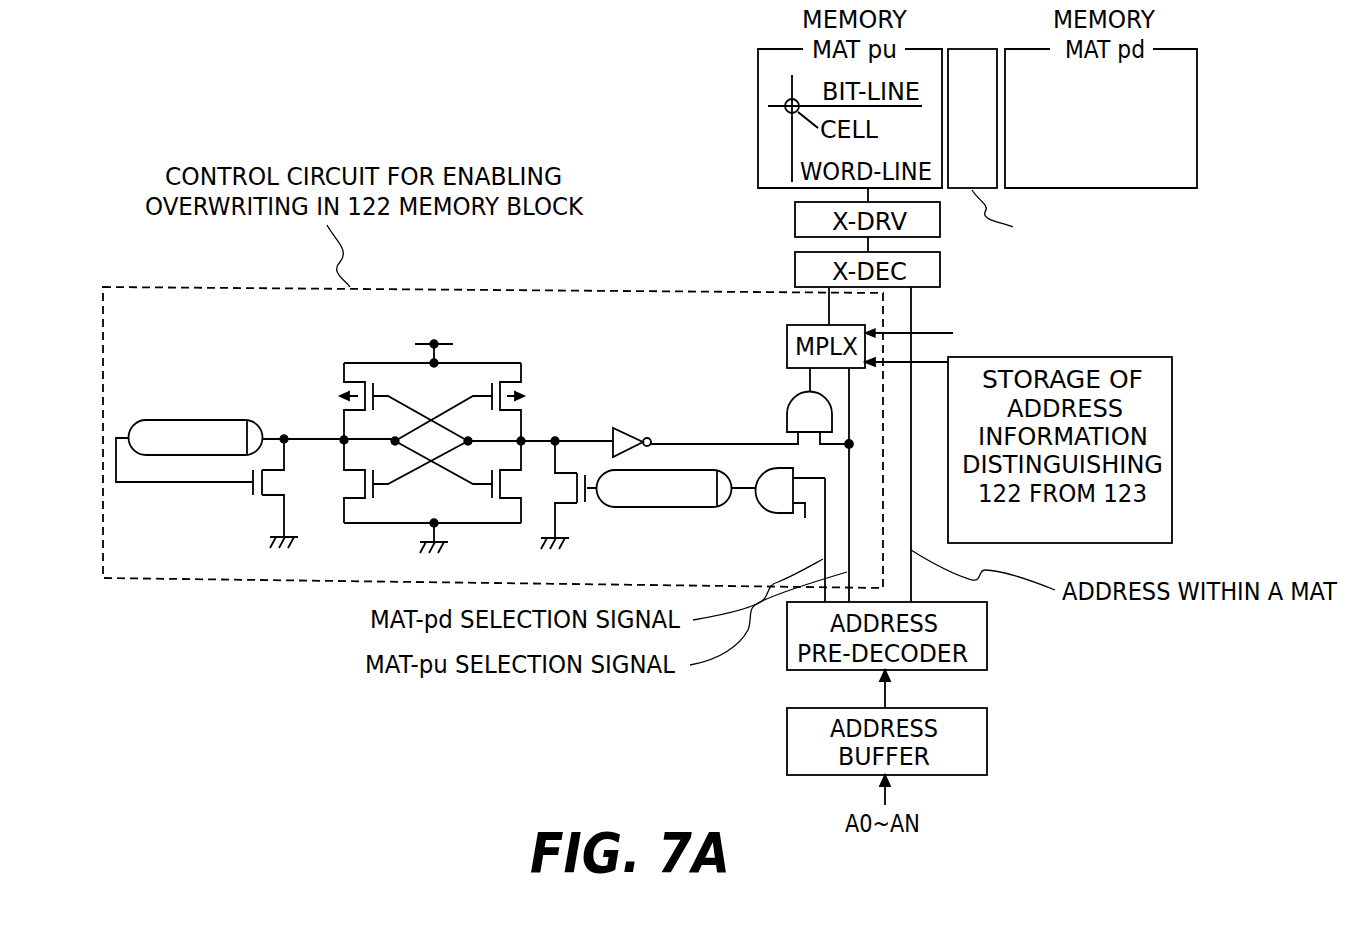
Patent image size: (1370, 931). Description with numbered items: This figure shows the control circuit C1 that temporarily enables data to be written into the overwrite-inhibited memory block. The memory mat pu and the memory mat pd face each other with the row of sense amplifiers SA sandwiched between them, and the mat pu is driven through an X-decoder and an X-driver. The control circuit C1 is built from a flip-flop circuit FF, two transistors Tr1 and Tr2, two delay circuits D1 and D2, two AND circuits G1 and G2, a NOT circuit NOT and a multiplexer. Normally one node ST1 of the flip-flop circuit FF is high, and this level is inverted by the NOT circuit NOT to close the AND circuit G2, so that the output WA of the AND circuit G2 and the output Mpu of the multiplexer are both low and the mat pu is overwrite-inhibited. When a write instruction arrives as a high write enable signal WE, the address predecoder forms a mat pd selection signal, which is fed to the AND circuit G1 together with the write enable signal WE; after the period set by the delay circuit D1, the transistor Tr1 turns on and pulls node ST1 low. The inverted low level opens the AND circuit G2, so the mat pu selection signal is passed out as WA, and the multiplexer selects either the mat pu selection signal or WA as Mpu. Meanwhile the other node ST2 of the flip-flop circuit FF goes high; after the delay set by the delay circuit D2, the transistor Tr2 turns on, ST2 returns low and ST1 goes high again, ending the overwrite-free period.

The control circuit for enabling overwriting in 122 memory block C1 is at (520, 290).
The flip-flop circuit FF is at (492, 360).
The transistor Tr1 is at (563, 483).
The transistor Tr2 is at (207, 493).
The NOT circuit NOT is at (623, 428).
The AND circuit G1 is at (759, 512).
The AND circuit G2 is at (785, 418).
The delay circuit D1 is at (659, 488).
The delay circuit D2 is at (196, 437).
The node of the flip-flop circuit ST1 is at (540, 426).
The other node of the flip-flop circuit ST2 is at (329, 426).
The output of the AND circuit G2 WA is at (807, 382).
The write enable signal WE is at (892, 435).
The output of the multiplexer MPLX Mpu is at (829, 309).
The row of sense amplifiers SA is at (1075, 161).